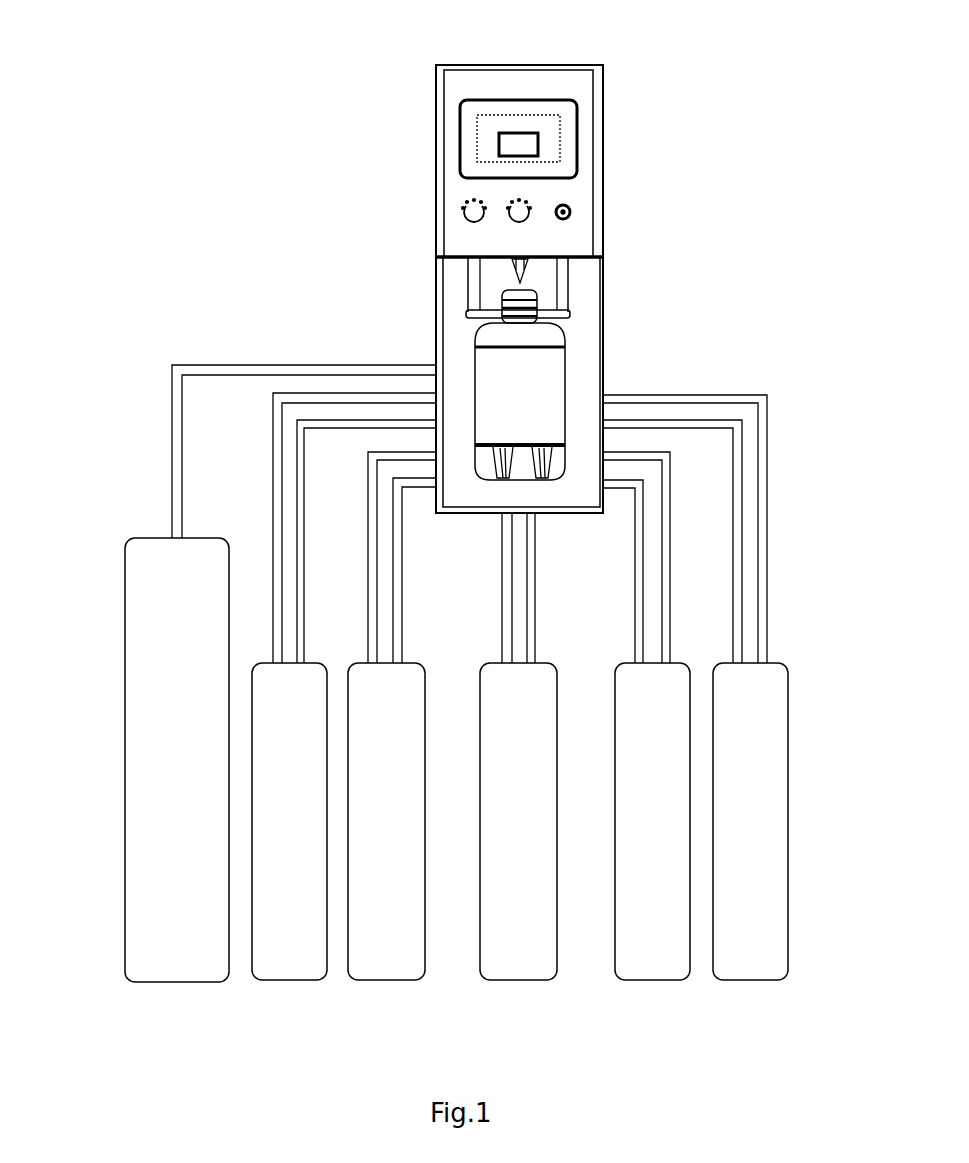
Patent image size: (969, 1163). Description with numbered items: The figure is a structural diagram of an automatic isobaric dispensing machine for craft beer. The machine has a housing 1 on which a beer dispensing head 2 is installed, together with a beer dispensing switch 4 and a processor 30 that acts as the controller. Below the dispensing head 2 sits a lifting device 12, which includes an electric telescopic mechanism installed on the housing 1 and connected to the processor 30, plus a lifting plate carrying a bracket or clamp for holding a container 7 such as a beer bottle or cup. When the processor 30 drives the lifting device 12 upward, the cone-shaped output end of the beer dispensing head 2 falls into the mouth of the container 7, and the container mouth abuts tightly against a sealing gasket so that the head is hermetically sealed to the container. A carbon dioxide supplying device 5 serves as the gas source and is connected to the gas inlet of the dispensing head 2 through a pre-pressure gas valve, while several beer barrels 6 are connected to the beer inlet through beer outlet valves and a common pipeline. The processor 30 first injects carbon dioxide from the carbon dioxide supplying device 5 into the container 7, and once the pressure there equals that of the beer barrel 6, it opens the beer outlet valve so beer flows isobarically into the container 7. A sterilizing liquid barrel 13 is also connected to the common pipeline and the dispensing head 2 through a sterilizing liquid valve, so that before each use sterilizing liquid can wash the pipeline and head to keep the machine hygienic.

The housing 1 is at (558, 90).
The processor 30 is at (538, 138).
The beer dispensing switch 4 is at (572, 212).
The lifting device 12 is at (475, 295).
The beer dispensing head 2 is at (521, 272).
The container 7 is at (550, 395).
The carbon dioxide supplying device 5 is at (170, 567).
The beer barrel 6 is at (512, 962).
The sterilizing liquid barrel 13 is at (765, 725).